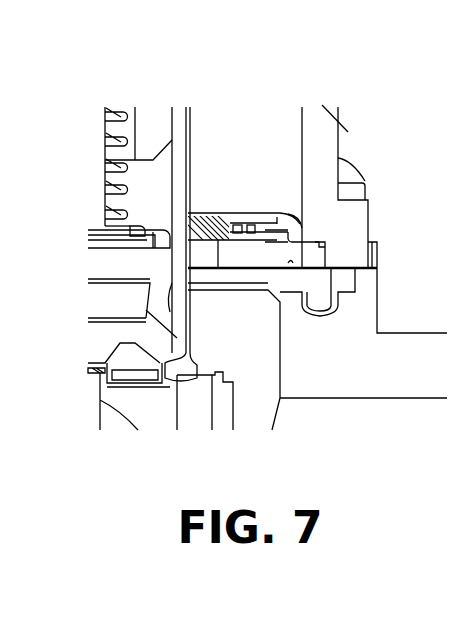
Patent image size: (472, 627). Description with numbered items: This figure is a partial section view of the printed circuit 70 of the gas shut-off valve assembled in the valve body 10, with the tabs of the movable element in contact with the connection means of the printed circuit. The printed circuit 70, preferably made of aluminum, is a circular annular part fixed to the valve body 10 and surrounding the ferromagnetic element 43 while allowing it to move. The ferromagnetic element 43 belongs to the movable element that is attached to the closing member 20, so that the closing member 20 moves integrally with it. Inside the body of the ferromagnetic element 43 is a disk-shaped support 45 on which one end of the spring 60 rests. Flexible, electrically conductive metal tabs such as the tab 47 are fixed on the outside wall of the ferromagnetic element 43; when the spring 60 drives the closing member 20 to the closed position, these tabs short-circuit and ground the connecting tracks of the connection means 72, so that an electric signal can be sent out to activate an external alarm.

The valve body 10 is at (318, 152).
The closing member 20 is at (160, 333).
The ferromagnetic element 43 is at (182, 172).
The support 45 is at (134, 225).
The flexible metal tab 47 is at (220, 227).
The spring 60 is at (108, 118).
The printed circuit 70 is at (265, 256).
The connection means 72 is at (393, 183).